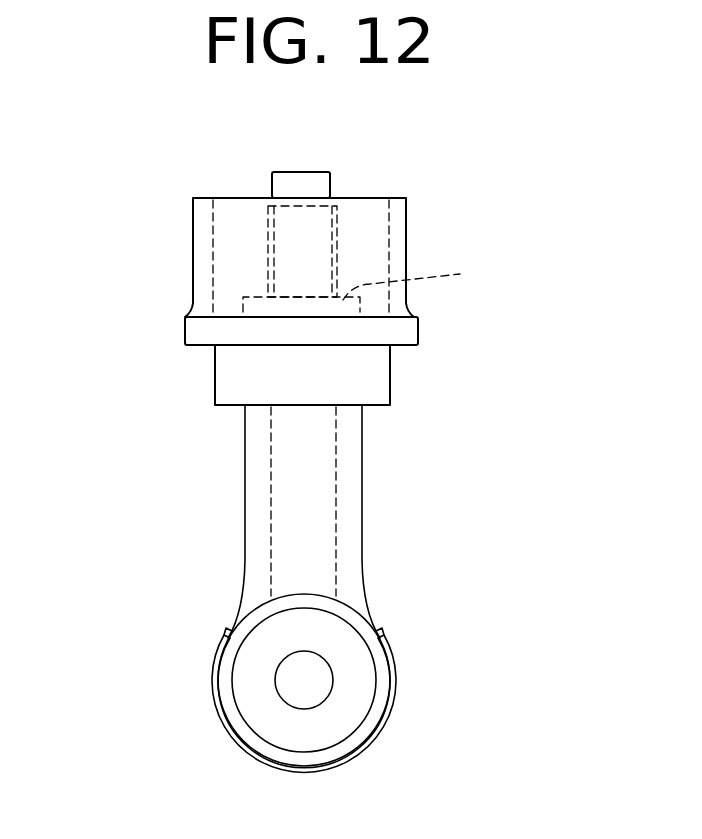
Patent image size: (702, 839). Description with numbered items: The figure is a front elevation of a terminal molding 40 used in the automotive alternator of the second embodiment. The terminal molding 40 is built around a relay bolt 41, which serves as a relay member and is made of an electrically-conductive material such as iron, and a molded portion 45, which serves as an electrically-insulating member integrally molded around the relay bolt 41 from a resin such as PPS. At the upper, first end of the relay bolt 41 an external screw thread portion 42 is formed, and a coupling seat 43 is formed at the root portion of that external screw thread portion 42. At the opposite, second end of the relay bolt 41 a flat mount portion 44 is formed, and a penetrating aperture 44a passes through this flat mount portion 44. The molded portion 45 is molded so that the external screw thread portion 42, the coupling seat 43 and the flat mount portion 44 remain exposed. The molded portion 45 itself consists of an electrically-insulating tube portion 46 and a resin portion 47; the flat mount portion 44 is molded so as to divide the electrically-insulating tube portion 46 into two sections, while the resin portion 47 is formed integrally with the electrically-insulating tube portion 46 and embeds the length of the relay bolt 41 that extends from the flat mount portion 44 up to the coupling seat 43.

The terminal molding 40 is at (101, 140).
The relay bolt 41 is at (267, 180).
The external screw thread portion 42 is at (323, 183).
The coupling seat 43 is at (370, 280).
The flat mount portion 44 is at (343, 647).
The penetrating aperture 44a is at (320, 682).
The molded portion 45 is at (183, 302).
The electrically-insulating tube portion 46 is at (243, 623).
The resin portion 47 is at (355, 468).